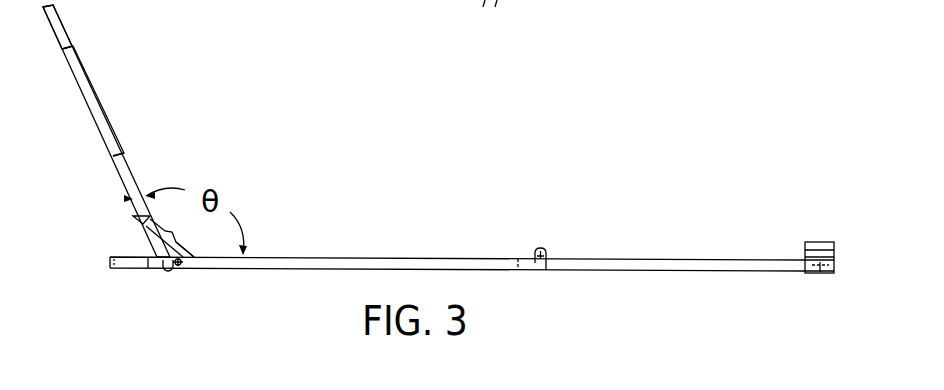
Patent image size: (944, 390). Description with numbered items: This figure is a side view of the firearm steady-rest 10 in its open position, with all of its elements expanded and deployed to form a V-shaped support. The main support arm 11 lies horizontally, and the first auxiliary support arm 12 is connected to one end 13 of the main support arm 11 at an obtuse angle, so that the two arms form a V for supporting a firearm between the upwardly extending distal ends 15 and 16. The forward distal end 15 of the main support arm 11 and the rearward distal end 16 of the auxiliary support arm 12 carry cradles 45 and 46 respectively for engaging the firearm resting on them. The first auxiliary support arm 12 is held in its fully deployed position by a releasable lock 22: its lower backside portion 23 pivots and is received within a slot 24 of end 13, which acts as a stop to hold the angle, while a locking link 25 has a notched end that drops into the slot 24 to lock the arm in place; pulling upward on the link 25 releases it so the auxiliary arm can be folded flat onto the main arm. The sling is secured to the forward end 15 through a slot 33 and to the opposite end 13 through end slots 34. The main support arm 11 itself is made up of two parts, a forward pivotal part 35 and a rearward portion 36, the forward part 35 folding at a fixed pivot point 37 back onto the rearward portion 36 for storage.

The firearm steady-rest 10 is at (408, 157).
The main support arm 11 is at (650, 259).
The first auxiliary support arm 12 is at (93, 87).
The end of main support arm 13 is at (200, 266).
The forward distal end 15 is at (800, 263).
The rearward distal end 16 is at (75, 52).
The releasable lock 22 is at (183, 228).
The lower backside portion 23 is at (150, 253).
The slot 24 is at (179, 268).
The locking link 25 is at (195, 250).
The slot 33 is at (817, 272).
The end slots 34 is at (118, 270).
The forward pivotal part 35 is at (690, 270).
The rearward portion 36 is at (368, 270).
The fixed pivot point 37 is at (541, 250).
The cradle 45 is at (818, 240).
The cradle 46 is at (60, 20).